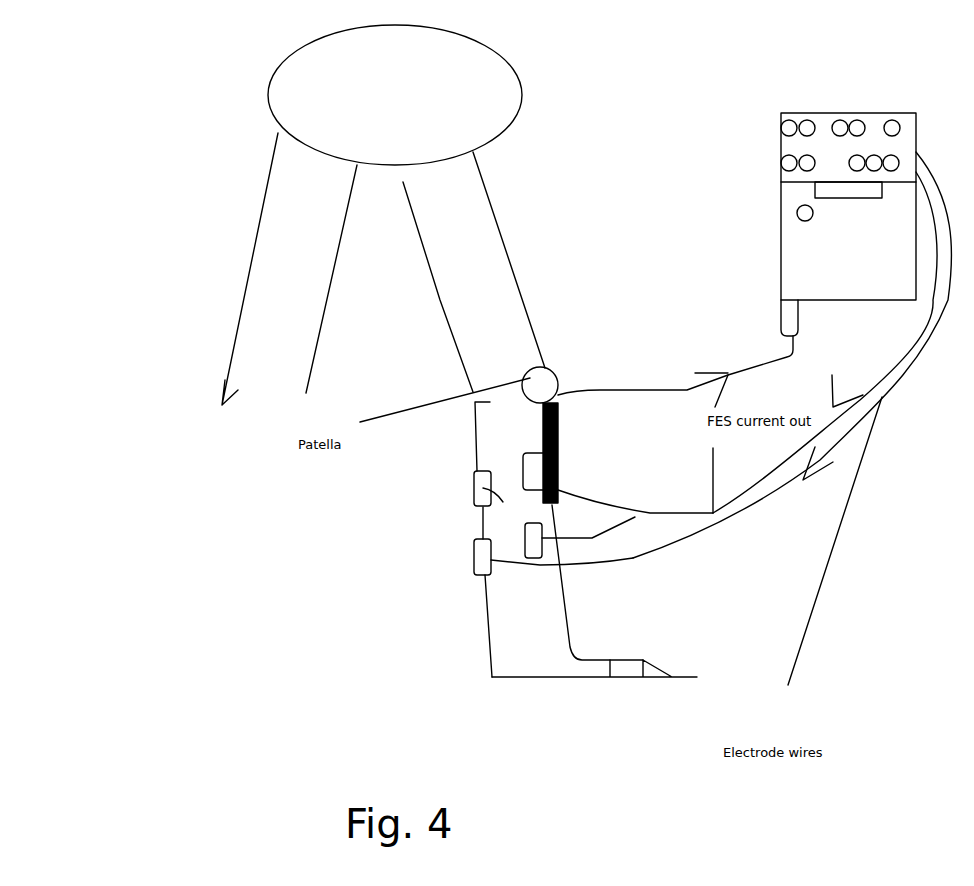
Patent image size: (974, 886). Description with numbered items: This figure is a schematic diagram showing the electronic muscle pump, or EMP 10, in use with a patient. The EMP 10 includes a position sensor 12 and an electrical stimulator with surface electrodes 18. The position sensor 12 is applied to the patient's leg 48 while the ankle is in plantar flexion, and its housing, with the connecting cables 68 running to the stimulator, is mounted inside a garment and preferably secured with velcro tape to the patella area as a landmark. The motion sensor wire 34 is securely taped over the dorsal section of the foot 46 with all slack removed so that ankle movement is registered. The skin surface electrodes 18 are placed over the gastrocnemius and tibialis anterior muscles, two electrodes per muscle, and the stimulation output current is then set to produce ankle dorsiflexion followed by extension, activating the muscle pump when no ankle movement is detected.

The EMP 10 is at (882, 73).
The position sensor 12 is at (560, 443).
The surface electrodes 18 is at (480, 567).
The motion sensor wire 34 is at (578, 650).
The foot 46 is at (577, 668).
The leg 48 is at (438, 275).
The connecting cables 68 is at (662, 390).